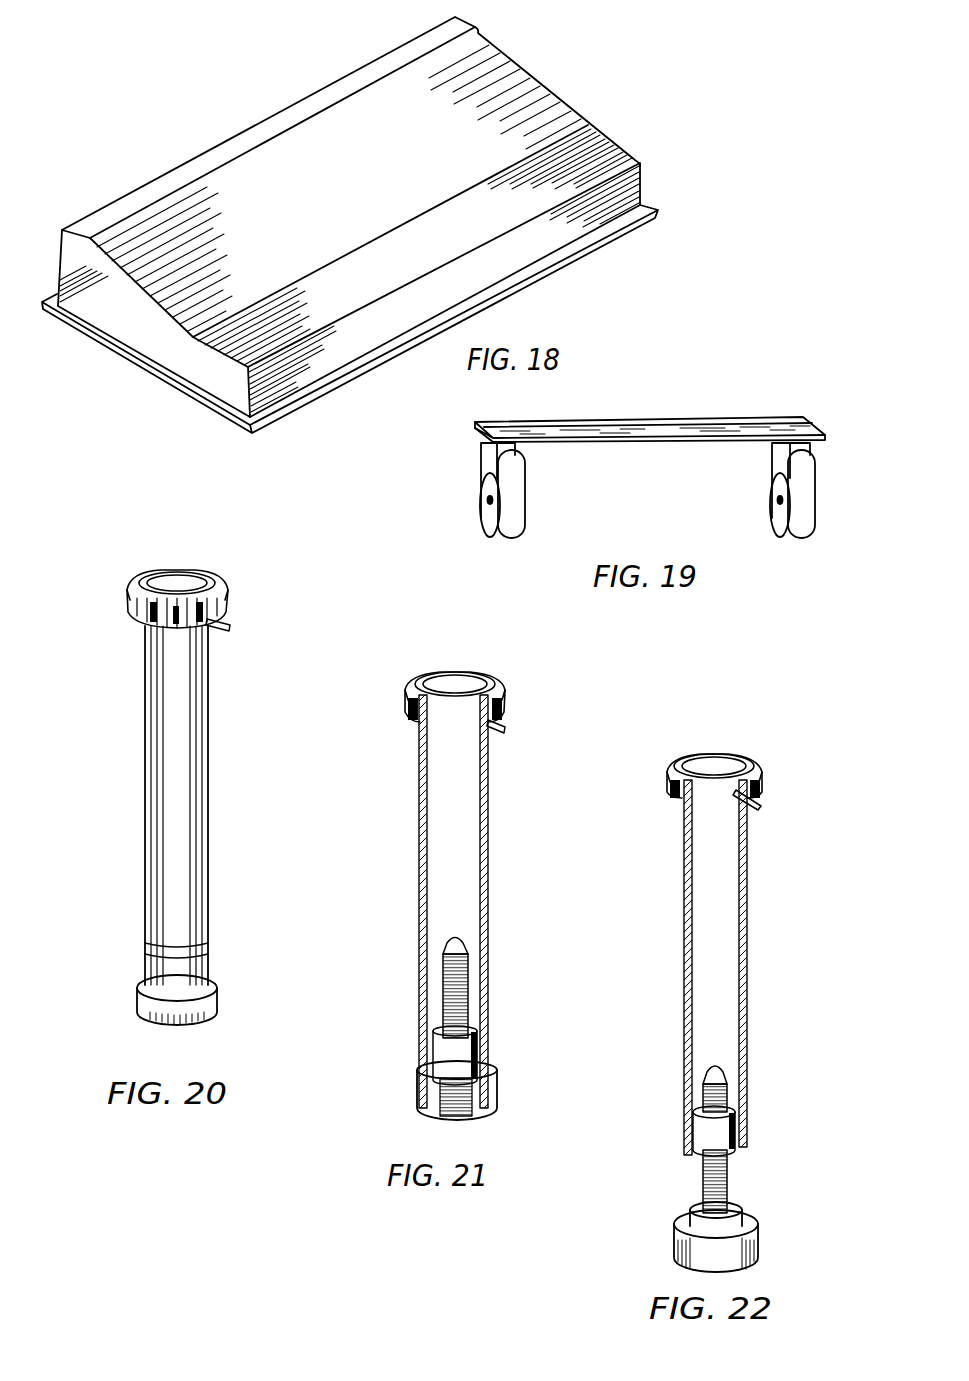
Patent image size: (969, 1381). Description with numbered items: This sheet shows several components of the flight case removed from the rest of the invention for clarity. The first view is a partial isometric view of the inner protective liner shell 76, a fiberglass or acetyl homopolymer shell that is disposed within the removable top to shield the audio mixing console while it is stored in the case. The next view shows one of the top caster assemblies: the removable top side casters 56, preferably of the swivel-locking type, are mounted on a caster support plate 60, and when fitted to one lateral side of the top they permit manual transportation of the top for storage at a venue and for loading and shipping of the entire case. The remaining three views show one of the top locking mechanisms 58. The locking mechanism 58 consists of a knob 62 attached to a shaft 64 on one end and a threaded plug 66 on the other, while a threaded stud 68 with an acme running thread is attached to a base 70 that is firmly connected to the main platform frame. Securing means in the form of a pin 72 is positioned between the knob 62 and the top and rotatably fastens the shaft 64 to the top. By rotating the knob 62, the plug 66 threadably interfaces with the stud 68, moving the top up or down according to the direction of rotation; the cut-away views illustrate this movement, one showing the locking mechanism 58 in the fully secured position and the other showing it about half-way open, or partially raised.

In FIG. 18, the inner protective liner shell 76 is at (228, 138).
In FIG. 19, the caster support plate 60 is at (692, 417).
In FIG. 19, the removable top side casters 56 is at (478, 527).
In FIG. 20, the locking mechanism 58 is at (185, 760).
In FIG. 21, the locking mechanism 58 is at (458, 871).
In FIG. 22, the locking mechanism 58 is at (709, 977).
In FIG. 20, the knob 62 is at (161, 571).
In FIG. 21, the knob 62 is at (424, 684).
In FIG. 22, the knob 62 is at (690, 755).
In FIG. 20, the shaft 64 is at (144, 868).
In FIG. 21, the shaft 64 is at (421, 932).
In FIG. 21, the threaded plug 66 is at (481, 1048).
In FIG. 22, the threaded plug 66 is at (735, 1148).
In FIG. 21, the threaded stud 68 is at (465, 980).
In FIG. 22, the threaded stud 68 is at (729, 1088).
In FIG. 20, the base 70 is at (142, 998).
In FIG. 21, the base 70 is at (484, 1108).
In FIG. 22, the base 70 is at (675, 1238).
In FIG. 20, the pin 72 is at (231, 624).
In FIG. 21, the pin 72 is at (506, 724).
In FIG. 22, the pin 72 is at (762, 804).